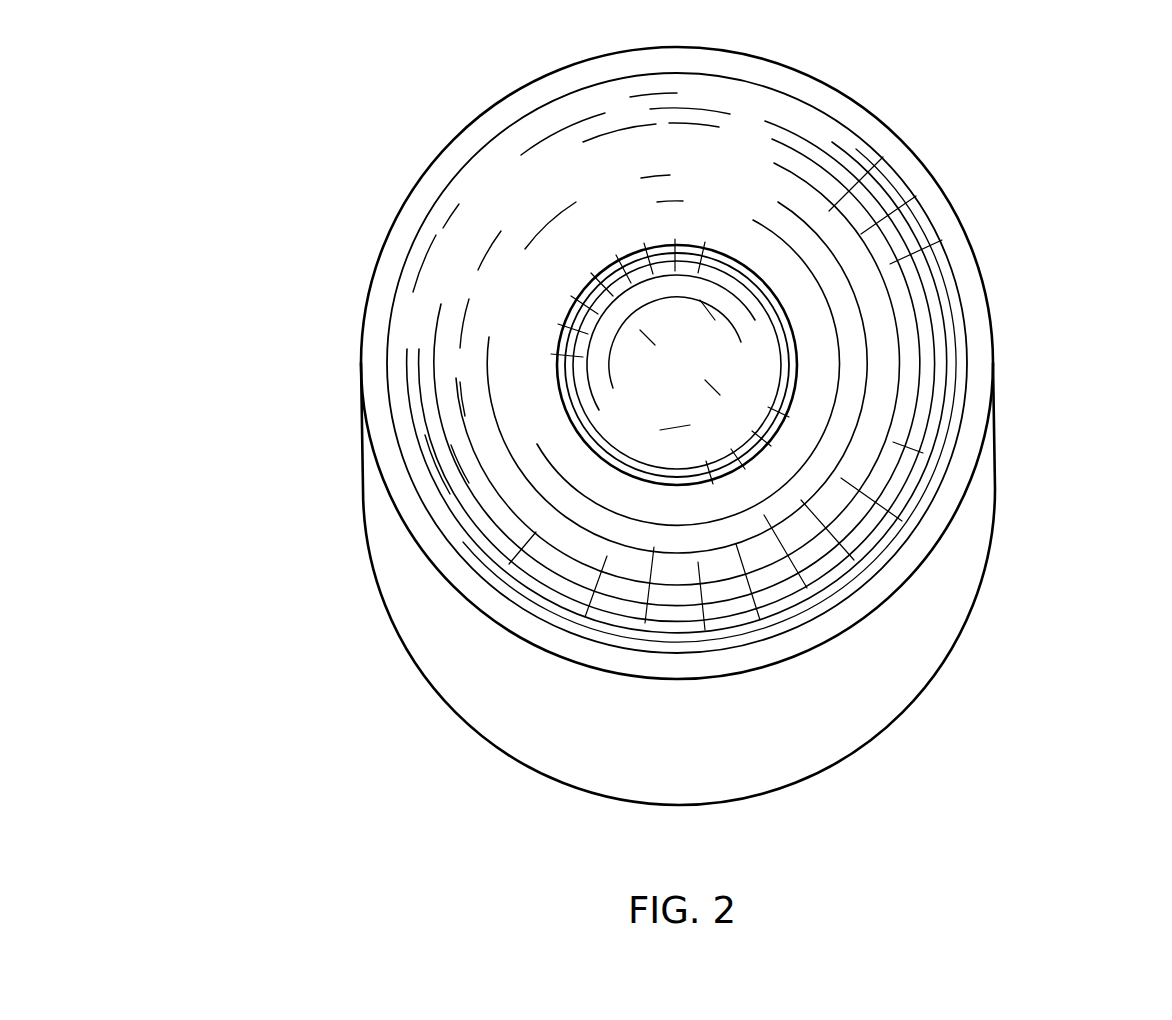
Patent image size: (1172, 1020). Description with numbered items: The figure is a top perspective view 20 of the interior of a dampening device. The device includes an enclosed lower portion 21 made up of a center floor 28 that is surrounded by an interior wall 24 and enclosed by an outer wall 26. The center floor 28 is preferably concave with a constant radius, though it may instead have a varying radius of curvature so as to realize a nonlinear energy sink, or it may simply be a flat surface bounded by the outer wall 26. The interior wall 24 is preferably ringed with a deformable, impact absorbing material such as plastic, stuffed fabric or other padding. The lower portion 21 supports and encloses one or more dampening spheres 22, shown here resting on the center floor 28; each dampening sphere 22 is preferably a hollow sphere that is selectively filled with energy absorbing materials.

The top perspective view 20 is at (828, 53).
The enclosed lower portion 21 is at (467, 137).
The dampening sphere 22 is at (690, 328).
The interior wall 24 is at (962, 398).
The outer wall 26 is at (979, 448).
The center floor 28 is at (482, 390).